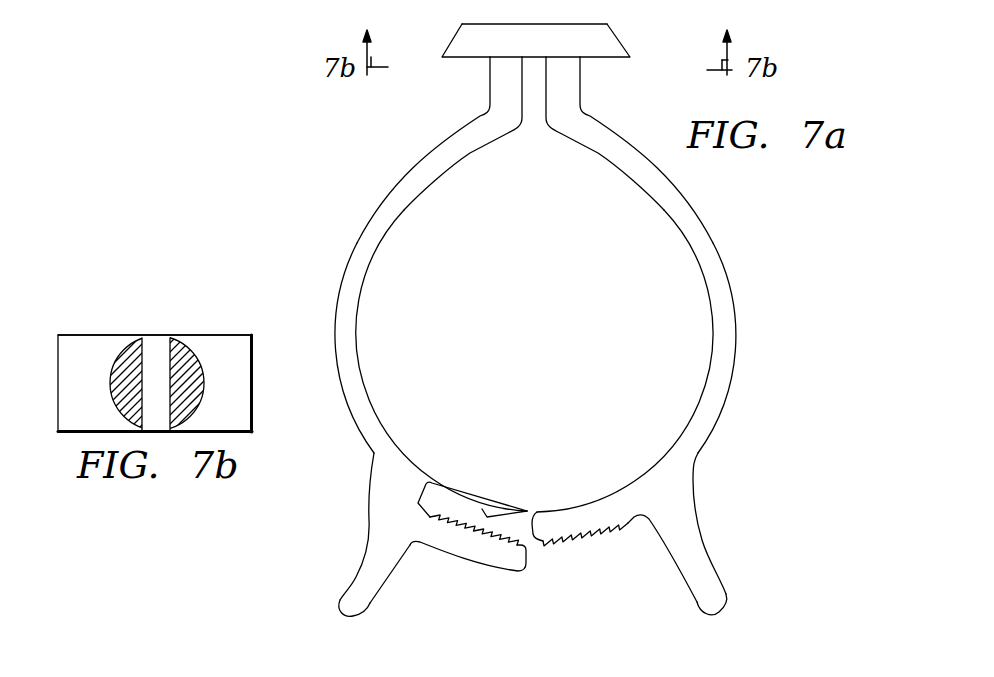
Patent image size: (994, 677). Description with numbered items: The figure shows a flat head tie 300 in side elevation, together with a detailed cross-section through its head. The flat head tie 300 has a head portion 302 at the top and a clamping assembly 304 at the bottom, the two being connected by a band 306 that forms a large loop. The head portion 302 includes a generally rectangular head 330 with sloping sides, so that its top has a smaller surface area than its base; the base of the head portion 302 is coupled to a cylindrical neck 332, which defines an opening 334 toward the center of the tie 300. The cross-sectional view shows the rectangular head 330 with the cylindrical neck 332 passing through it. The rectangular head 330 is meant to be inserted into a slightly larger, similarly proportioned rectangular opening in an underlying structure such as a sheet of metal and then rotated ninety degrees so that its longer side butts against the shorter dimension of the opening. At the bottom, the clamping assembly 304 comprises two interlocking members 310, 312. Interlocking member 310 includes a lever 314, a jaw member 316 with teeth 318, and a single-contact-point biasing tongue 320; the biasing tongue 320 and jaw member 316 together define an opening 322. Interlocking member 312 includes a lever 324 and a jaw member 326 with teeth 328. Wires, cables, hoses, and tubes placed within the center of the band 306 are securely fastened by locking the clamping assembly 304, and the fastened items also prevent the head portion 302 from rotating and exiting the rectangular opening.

In FIG. 7a, the flat head tie 300 is at (285, 85).
In FIG. 7a, the head portion 302 is at (558, 31).
In FIG. 7b, the head portion 302 is at (65, 297).
In FIG. 7a, the clamping assembly 304 is at (770, 504).
In FIG. 7a, the band 306 is at (737, 312).
In FIG. 7a, the interlocking member 310 is at (315, 553).
In FIG. 7a, the interlocking member 312 is at (648, 635).
In FIG. 7a, the lever 314 is at (347, 607).
In FIG. 7a, the jaw member 316 is at (520, 573).
In FIG. 7a, the teeth 318 is at (443, 545).
In FIG. 7a, the single-contact-point biasing tongue 320 is at (524, 504).
In FIG. 7a, the opening 322 is at (452, 491).
In FIG. 7a, the lever 324 is at (725, 610).
In FIG. 7a, the jaw member 326 is at (540, 514).
In FIG. 7a, the teeth 328 is at (608, 560).
In FIG. 7a, the rectangular head 330 is at (478, 23).
In FIG. 7b, the rectangular head 330 is at (228, 335).
In FIG. 7a, the cylindrical neck 332 is at (598, 96).
In FIG. 7b, the cylindrical neck 332 is at (195, 355).
In FIG. 7a, the opening 334 is at (538, 152).